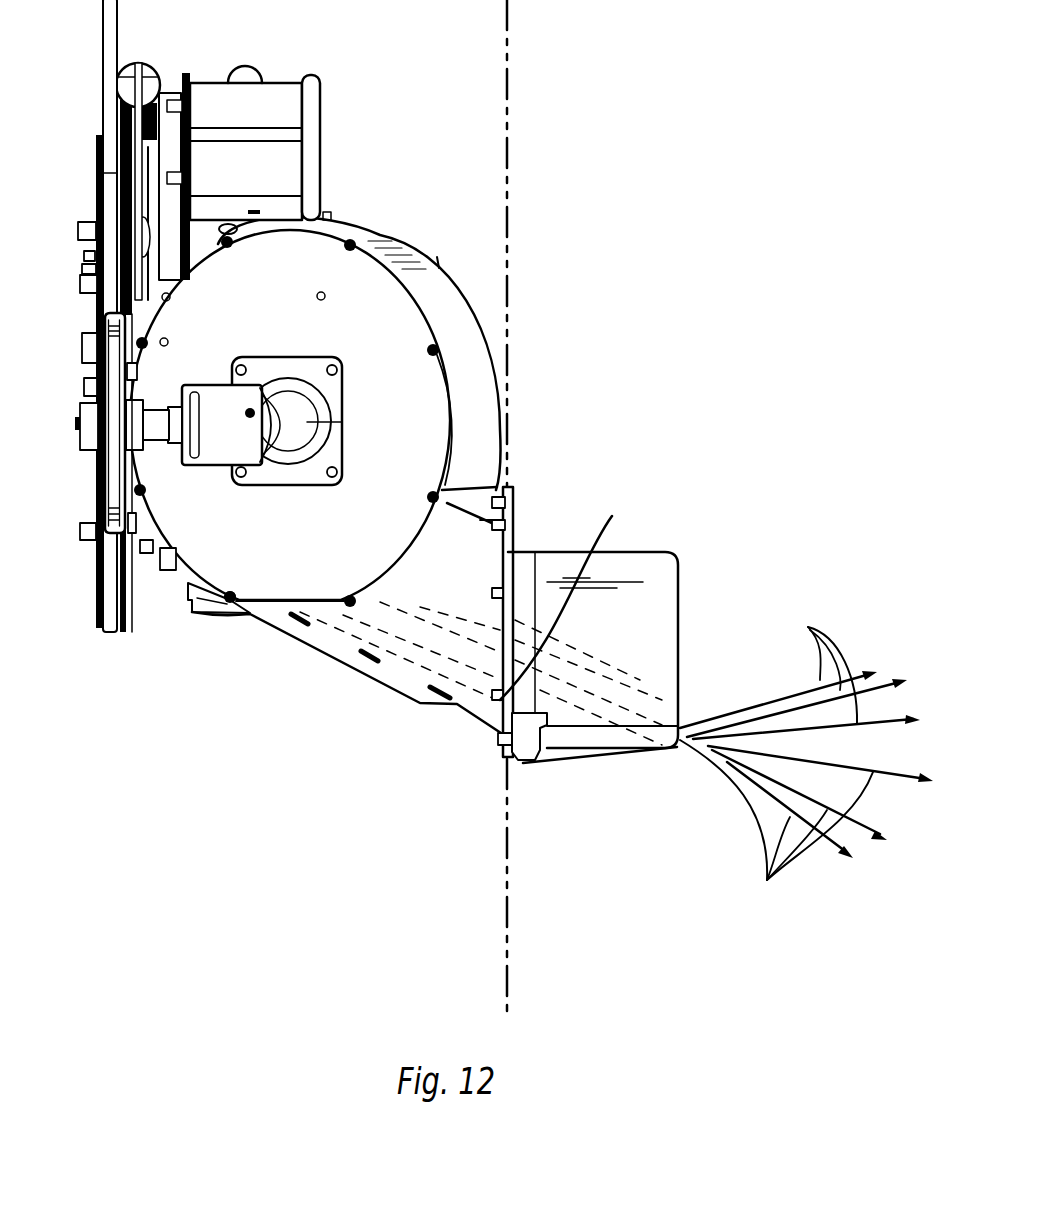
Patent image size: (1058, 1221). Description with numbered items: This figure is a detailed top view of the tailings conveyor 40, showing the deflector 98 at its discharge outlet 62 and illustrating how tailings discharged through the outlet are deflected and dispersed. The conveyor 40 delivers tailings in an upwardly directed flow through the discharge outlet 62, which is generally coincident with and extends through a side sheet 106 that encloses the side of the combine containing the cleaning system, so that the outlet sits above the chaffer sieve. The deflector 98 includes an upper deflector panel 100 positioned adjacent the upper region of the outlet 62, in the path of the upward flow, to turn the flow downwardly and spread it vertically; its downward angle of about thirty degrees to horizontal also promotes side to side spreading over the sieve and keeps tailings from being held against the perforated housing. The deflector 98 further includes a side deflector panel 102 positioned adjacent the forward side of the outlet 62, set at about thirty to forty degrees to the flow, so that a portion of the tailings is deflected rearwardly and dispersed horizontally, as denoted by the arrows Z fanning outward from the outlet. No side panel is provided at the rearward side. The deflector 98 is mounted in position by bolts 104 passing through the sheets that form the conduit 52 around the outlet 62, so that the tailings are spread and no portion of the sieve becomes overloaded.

The conveyor 40 is at (567, 193).
The conduit 52 is at (397, 695).
The discharge outlet 62 is at (512, 575).
The deflector 98 is at (633, 627).
The upper deflector panel 100 is at (680, 613).
The side deflector panel 102 is at (590, 764).
The bolts 104 is at (510, 592).
The side sheet 106 is at (507, 940).
The arrows Z is at (806, 758).